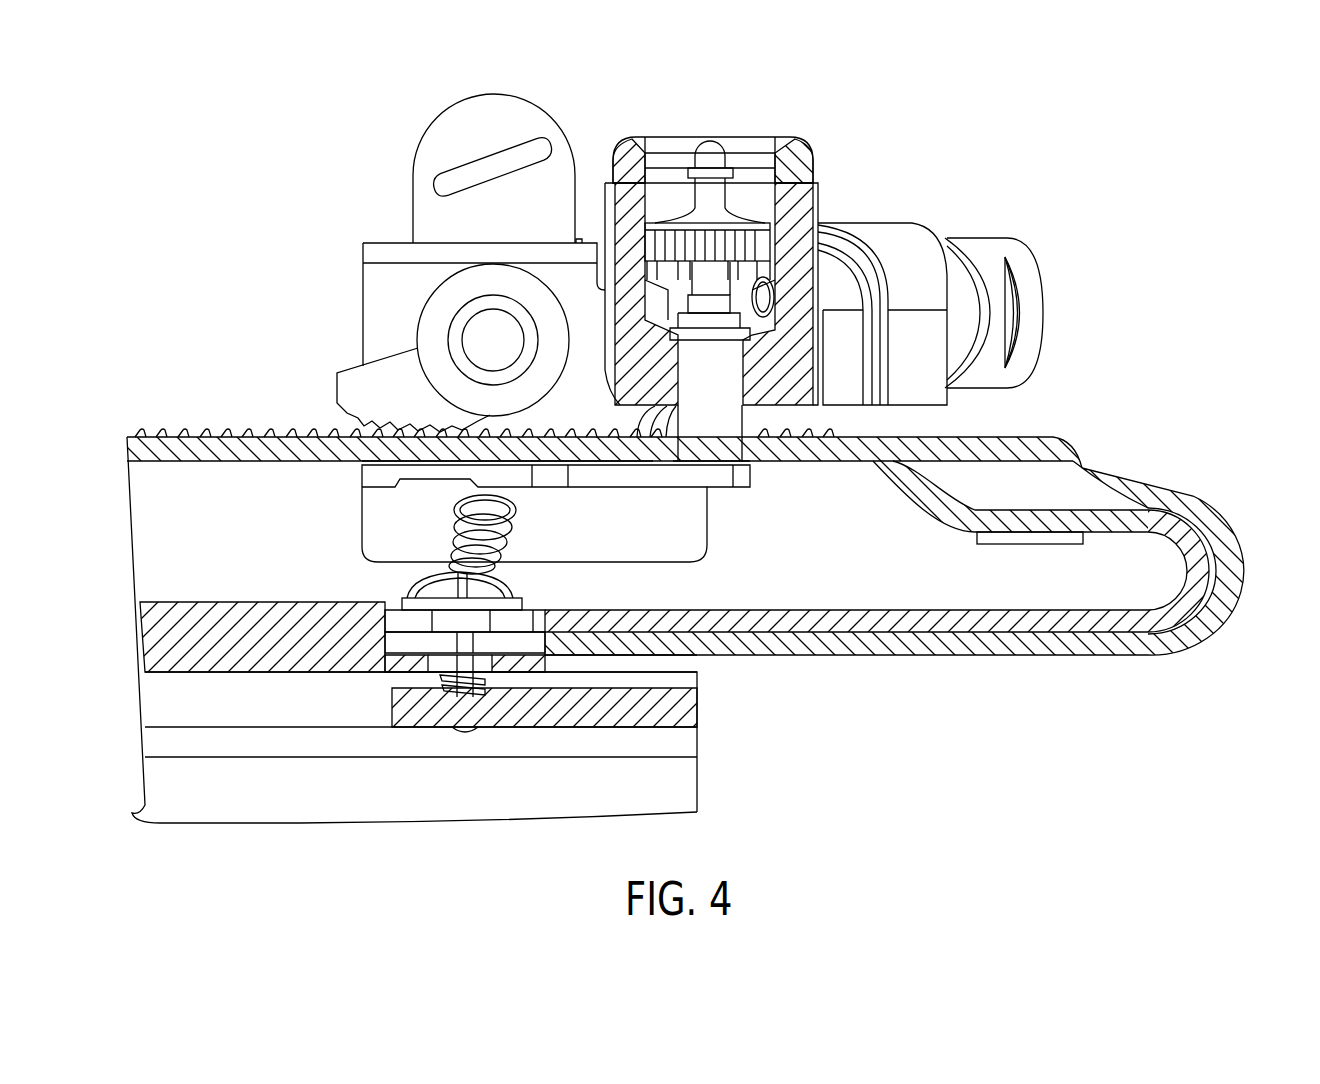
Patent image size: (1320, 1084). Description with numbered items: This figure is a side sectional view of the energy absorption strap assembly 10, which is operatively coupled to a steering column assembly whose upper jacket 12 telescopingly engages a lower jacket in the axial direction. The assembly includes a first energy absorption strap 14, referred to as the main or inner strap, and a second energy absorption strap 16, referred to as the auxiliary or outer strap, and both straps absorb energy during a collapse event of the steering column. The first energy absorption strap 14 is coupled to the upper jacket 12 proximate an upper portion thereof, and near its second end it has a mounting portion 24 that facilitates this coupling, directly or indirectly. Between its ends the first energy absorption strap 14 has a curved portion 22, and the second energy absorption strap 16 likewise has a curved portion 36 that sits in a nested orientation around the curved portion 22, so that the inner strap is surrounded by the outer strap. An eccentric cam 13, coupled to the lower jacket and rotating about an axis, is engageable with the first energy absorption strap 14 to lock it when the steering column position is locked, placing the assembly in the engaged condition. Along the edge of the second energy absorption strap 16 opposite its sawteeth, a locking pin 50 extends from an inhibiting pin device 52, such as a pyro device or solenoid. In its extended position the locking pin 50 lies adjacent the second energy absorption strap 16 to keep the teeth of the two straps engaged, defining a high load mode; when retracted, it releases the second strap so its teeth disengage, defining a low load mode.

The energy absorption strap assembly 10 is at (982, 170).
The upper jacket 12 is at (224, 810).
The eccentric cam 13 is at (362, 386).
The first energy absorption strap 14 is at (862, 618).
The second energy absorption strap 16 is at (780, 650).
The curved portion 22 is at (1190, 590).
The mounting portion 24 is at (553, 618).
The curved portion 36 is at (1215, 530).
The locking pin 50 is at (718, 453).
The inhibiting pin device 52 is at (738, 208).